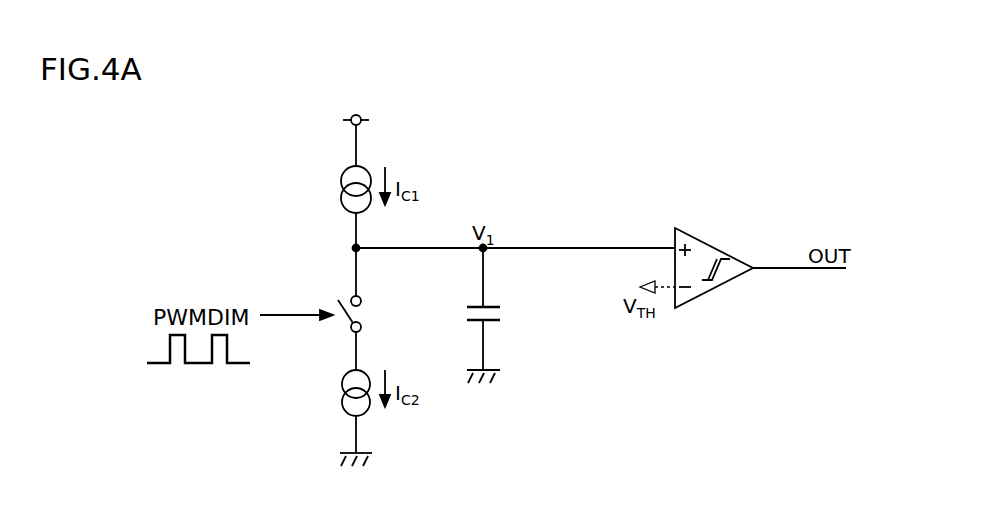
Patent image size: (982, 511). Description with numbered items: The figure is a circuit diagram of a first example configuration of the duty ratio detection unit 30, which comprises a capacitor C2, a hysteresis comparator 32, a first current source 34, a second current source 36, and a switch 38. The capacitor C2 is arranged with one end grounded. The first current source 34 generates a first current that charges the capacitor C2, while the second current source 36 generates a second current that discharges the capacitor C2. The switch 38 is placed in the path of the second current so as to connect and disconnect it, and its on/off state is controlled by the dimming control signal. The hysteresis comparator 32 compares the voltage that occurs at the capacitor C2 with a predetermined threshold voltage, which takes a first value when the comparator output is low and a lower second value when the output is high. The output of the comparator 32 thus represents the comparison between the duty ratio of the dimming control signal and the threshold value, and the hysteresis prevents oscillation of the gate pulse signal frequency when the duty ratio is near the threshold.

The duty ratio detection unit 30 is at (517, 480).
The hysteresis comparator 32 is at (710, 290).
The first current source 34 is at (343, 190).
The second current source 36 is at (343, 395).
The switch 38 is at (365, 314).
The capacitor C2 is at (508, 313).